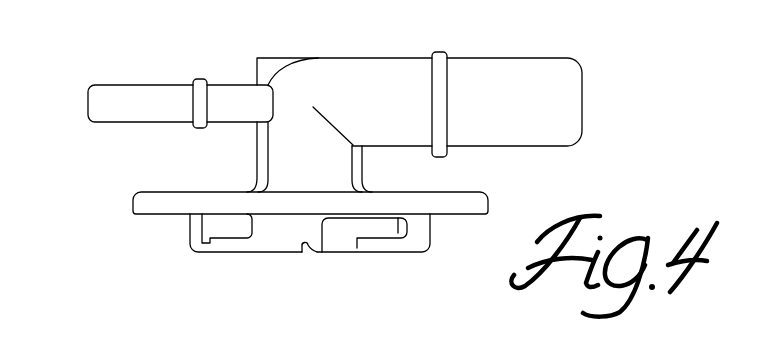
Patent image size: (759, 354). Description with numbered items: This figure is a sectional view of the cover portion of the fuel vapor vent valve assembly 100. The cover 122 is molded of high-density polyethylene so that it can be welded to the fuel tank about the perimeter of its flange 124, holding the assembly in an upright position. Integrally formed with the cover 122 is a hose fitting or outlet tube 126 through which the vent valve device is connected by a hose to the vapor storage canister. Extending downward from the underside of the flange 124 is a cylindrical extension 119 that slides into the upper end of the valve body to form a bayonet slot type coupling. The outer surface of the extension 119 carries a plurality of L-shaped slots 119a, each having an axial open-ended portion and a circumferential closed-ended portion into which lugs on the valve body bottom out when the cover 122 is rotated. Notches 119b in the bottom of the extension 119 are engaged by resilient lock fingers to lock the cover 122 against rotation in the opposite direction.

The fuel vapor vent valve assembly 100 is at (505, 52).
The outlet tube 126 is at (322, 63).
The cover 122 is at (255, 229).
The flange 124 is at (170, 192).
The cylindrical extension 119 is at (321, 268).
The L-shaped slots 119a is at (382, 228).
The notches 119b is at (311, 252).